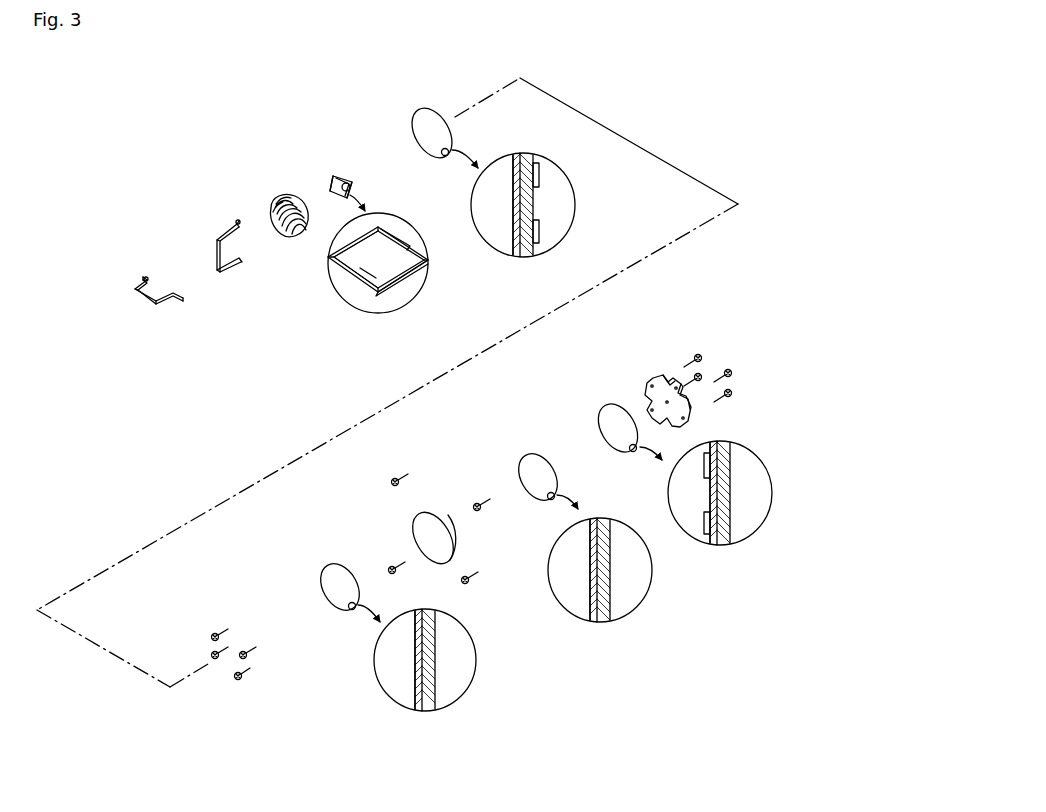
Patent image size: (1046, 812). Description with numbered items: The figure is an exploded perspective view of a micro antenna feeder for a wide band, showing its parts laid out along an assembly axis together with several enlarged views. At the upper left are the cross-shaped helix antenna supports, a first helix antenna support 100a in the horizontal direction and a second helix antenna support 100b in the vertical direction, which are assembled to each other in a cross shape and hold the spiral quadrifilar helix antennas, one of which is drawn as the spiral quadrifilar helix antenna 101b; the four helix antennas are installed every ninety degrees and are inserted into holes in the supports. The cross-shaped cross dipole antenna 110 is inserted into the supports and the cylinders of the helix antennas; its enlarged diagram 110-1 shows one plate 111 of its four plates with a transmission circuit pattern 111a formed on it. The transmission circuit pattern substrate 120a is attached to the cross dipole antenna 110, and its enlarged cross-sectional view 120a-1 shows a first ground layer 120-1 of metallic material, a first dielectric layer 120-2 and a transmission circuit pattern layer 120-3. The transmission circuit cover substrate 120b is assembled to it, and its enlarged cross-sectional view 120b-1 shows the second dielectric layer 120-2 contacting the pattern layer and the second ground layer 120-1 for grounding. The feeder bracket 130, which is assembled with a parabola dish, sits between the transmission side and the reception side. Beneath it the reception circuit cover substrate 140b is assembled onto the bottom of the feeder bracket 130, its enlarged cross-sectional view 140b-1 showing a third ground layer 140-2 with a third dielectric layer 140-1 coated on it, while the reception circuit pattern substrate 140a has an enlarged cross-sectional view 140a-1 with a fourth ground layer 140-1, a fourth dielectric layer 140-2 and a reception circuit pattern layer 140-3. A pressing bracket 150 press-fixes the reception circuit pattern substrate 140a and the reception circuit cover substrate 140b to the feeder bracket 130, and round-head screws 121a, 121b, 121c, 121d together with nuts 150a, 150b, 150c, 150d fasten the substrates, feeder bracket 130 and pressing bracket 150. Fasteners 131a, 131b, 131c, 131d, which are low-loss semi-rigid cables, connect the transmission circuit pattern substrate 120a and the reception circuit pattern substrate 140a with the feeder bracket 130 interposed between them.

The first helix antenna support 100a is at (143, 279).
The second helix antenna support 100b is at (217, 241).
The spiral quadrifilar helix antenna 101b is at (283, 210).
The cross dipole antenna 110 is at (338, 175).
The cross dipole antenna enlarged diagram 110-1 is at (371, 236).
The plate 111 is at (352, 283).
The transmission circuit pattern 111a is at (388, 270).
The transmission circuit pattern substrate 120a is at (430, 117).
The transmission circuit pattern substrate enlarged cross-sectional view 120a-1 is at (575, 205).
The ground layer 120-1 is at (513, 250).
The dielectric layer 120-2 is at (527, 253).
The transmission circuit pattern layer 120-3 is at (541, 231).
The transmission circuit cover substrate 120b is at (330, 573).
The transmission circuit cover substrate enlarged cross-sectional view 120b-1 is at (375, 676).
The round-head screw 121a is at (239, 680).
The round-head screw 121b is at (212, 655).
The round-head screw 121c is at (214, 634).
The round-head screw 121d is at (244, 652).
The feeder bracket 130 is at (420, 528).
The fastener 131a is at (389, 568).
The fastener 131b is at (400, 478).
The fastener 131c is at (475, 504).
The fastener 131d is at (468, 578).
The reception circuit pattern substrate 140a is at (609, 414).
The reception circuit pattern substrate enlarged cross-sectional view 140a-1 is at (772, 493).
The reception circuit cover substrate 140b is at (527, 460).
The reception circuit cover substrate enlarged cross-sectional view 140b-1 is at (648, 592).
The dielectric layer / ground layer 140-1 is at (731, 520).
The ground layer / dielectric layer 140-2 is at (715, 548).
The reception circuit pattern layer 140-3 is at (704, 515).
The pressing bracket 150 is at (645, 377).
The nut 150a is at (732, 393).
The nut 150b is at (694, 376).
The nut 150c is at (699, 355).
The nut 150d is at (732, 373).